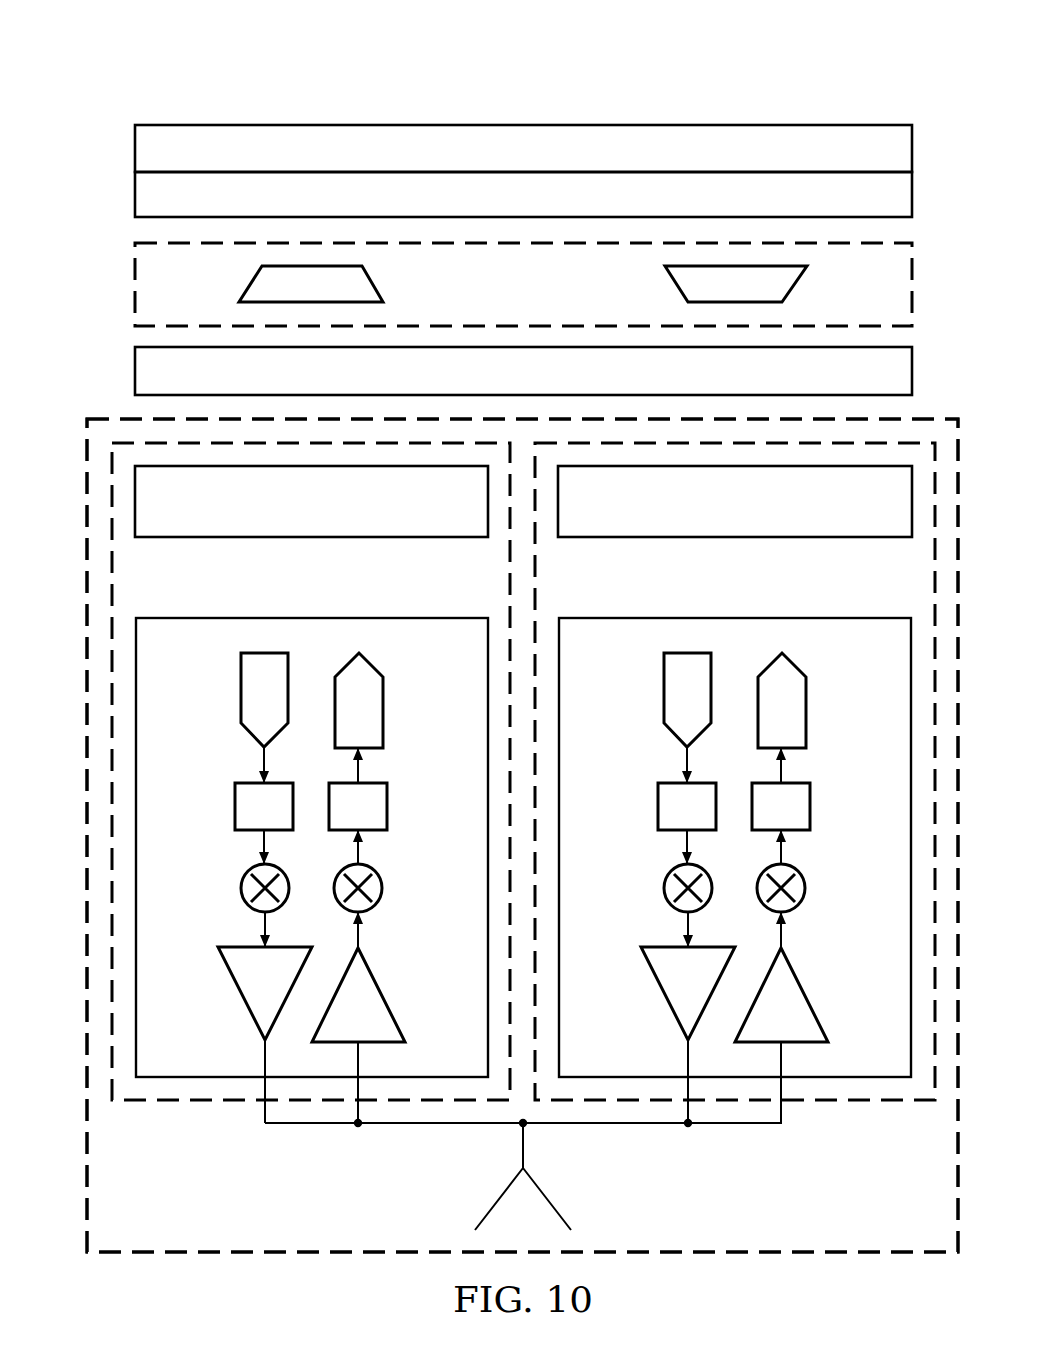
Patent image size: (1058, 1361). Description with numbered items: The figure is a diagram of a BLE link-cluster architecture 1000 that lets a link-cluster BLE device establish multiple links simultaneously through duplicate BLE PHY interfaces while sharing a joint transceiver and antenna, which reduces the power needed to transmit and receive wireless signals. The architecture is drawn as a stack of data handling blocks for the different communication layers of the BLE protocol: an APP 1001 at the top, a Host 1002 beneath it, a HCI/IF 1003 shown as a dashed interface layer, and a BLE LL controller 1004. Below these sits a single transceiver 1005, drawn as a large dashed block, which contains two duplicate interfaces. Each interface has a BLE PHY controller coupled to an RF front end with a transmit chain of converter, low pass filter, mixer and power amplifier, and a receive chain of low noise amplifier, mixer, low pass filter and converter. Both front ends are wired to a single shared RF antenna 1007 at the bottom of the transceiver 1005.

The BLE link-cluster architecture 1000 is at (355, 66).
The APP 1001 is at (137, 148).
The Host 1002 is at (137, 196).
The HCI/IF 1003 is at (127, 243).
The BLE LL controller 1004 is at (137, 372).
The transceiver 1005 is at (326, 1258).
The RF antenna 1007 is at (550, 1198).